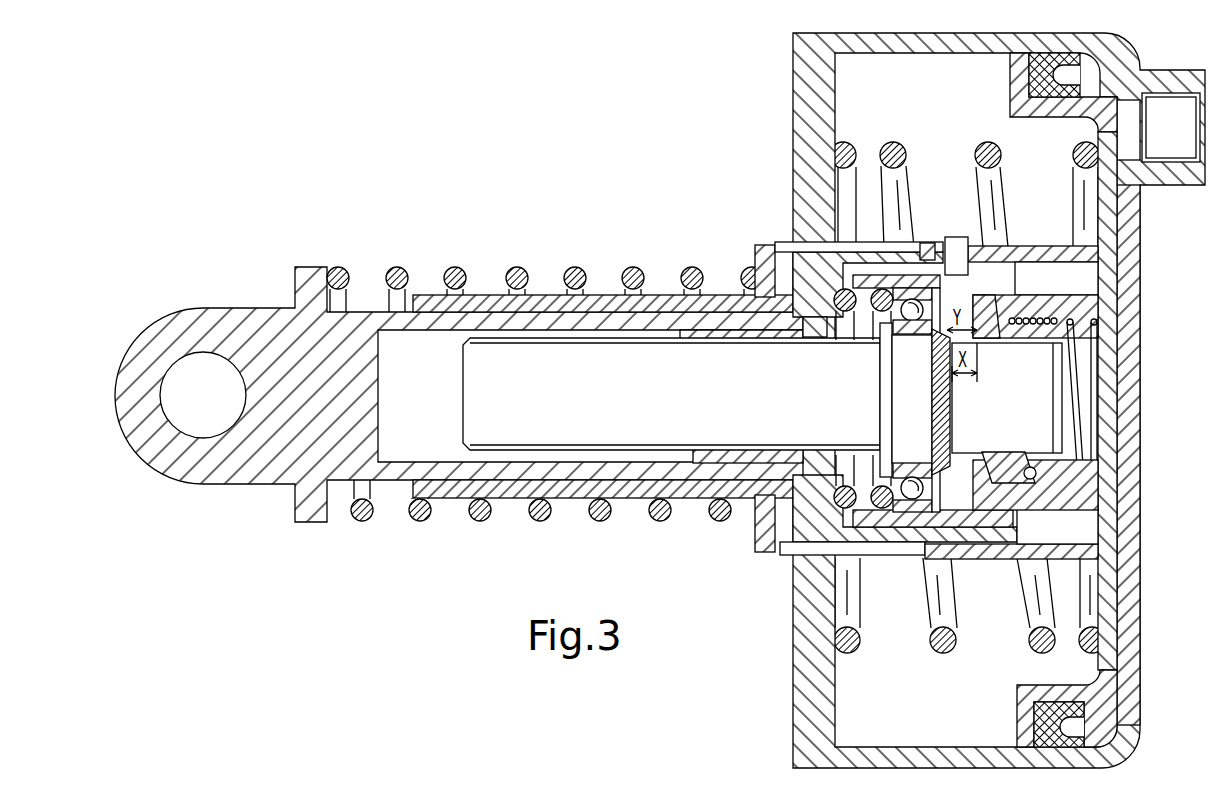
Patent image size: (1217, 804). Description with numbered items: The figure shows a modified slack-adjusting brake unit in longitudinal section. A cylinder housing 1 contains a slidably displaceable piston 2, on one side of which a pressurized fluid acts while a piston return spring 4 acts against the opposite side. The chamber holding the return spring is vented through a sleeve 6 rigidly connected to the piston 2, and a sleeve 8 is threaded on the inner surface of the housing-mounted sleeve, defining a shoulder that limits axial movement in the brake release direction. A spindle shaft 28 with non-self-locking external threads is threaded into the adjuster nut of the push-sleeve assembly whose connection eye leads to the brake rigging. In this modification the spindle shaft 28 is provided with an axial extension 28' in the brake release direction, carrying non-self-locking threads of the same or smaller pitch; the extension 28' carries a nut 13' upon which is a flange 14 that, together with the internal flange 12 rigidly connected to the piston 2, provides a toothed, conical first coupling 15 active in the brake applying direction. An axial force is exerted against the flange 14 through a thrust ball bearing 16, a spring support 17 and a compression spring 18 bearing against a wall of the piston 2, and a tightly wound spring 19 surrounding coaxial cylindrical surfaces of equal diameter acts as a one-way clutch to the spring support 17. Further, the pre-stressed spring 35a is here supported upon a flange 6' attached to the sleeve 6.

The cylinder housing 1 is at (805, 132).
The piston 2 is at (1012, 98).
The piston return spring 4 is at (897, 140).
The sleeve 6 is at (1076, 196).
The flange 6' is at (744, 375).
The sleeve 8 is at (876, 270).
The internal flange 12 is at (985, 335).
The nut 13' is at (961, 244).
The flange 14 is at (1003, 335).
The first coupling 15 is at (1026, 520).
The thrust ball bearing 16 is at (1040, 345).
The spring support 17 is at (1060, 340).
The compression spring 18 is at (1078, 320).
The tightly wound spring 19 is at (1045, 483).
The spindle shaft 28 is at (671, 324).
The axial extension 28' is at (1082, 398).
The pre-stressed spring 35a is at (452, 268).